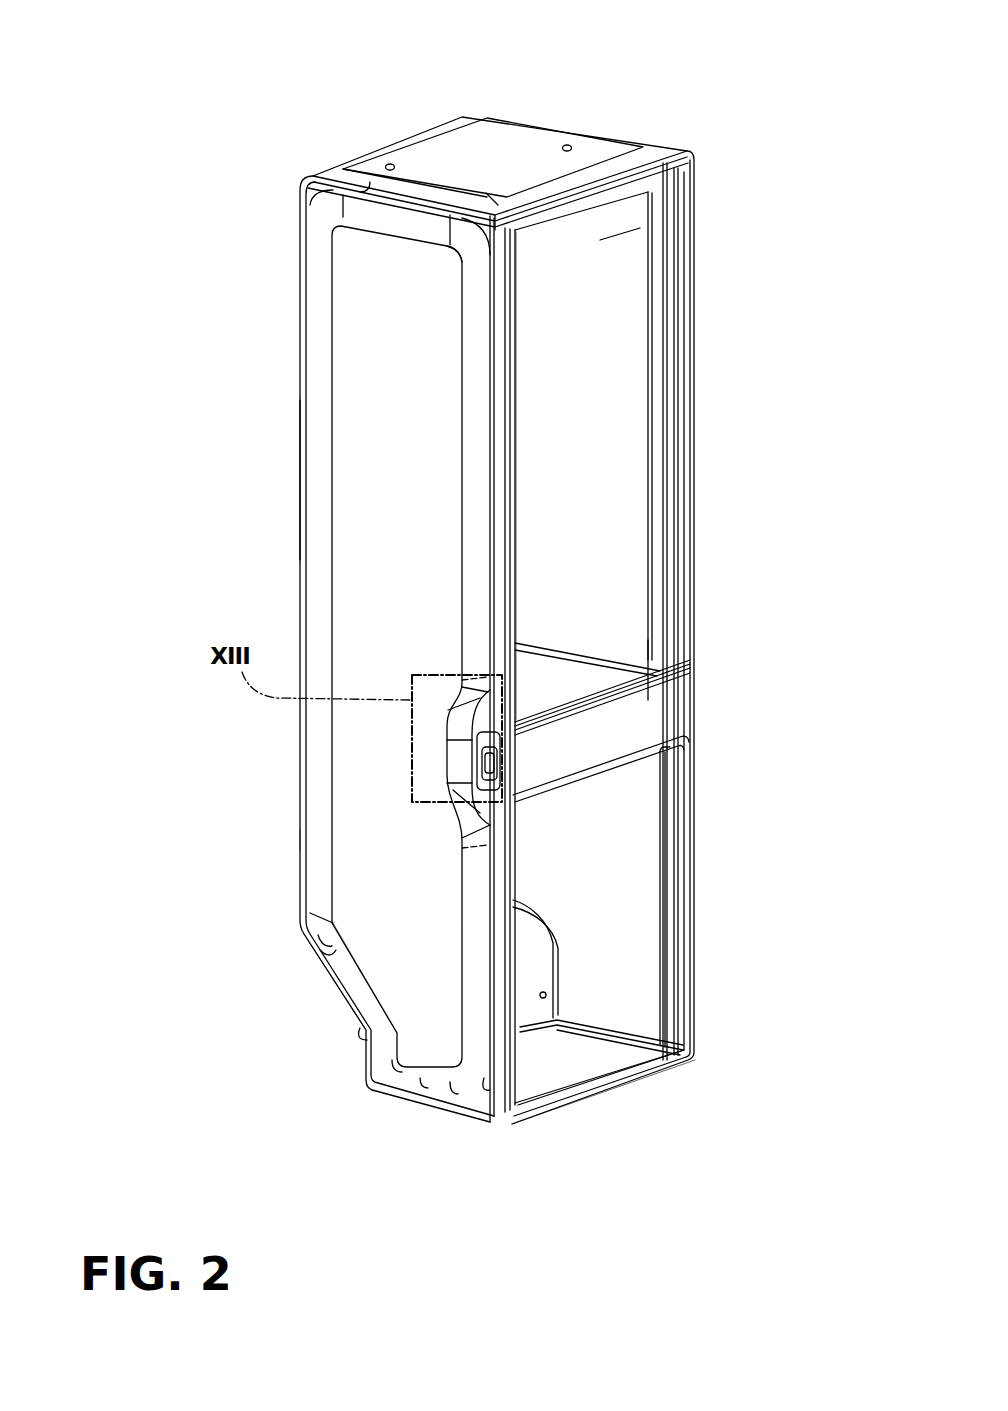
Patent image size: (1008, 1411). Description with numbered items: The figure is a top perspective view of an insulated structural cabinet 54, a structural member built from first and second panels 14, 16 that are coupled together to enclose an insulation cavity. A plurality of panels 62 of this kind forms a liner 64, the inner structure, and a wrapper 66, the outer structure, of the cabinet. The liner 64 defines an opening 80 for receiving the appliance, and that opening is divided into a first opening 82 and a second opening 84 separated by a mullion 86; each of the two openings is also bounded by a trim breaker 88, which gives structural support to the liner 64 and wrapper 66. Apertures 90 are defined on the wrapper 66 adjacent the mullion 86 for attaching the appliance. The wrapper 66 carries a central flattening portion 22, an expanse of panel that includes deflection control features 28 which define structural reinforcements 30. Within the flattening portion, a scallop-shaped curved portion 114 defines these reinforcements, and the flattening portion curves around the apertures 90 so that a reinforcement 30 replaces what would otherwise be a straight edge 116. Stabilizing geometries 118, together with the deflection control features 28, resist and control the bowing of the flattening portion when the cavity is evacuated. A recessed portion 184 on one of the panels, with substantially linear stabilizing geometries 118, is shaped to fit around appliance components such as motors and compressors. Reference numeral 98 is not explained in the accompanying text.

The first panel 14 is at (310, 203).
The second panel 16 is at (605, 252).
The central flattening portion 22 is at (375, 537).
The deflection control features 28 is at (357, 200).
The structural reinforcements 30 is at (448, 766).
The insulated structural cabinet 54 is at (752, 69).
The plurality of panels 62 is at (446, 112).
The liner 64 is at (630, 380).
The wrapper 66 is at (540, 155).
The opening 80 is at (620, 484).
The first opening 82 is at (612, 559).
The second opening 84 is at (620, 910).
The mullion 86 is at (618, 728).
The trim breaker 88 is at (683, 325).
The apertures 90 is at (500, 777).
The top trim flange 98 is at (307, 183).
The curved portion 114 is at (447, 264).
The straight edge 116 is at (315, 480).
The stabilizing geometries 118 is at (462, 238).
The recessed portion 184 is at (302, 1005).